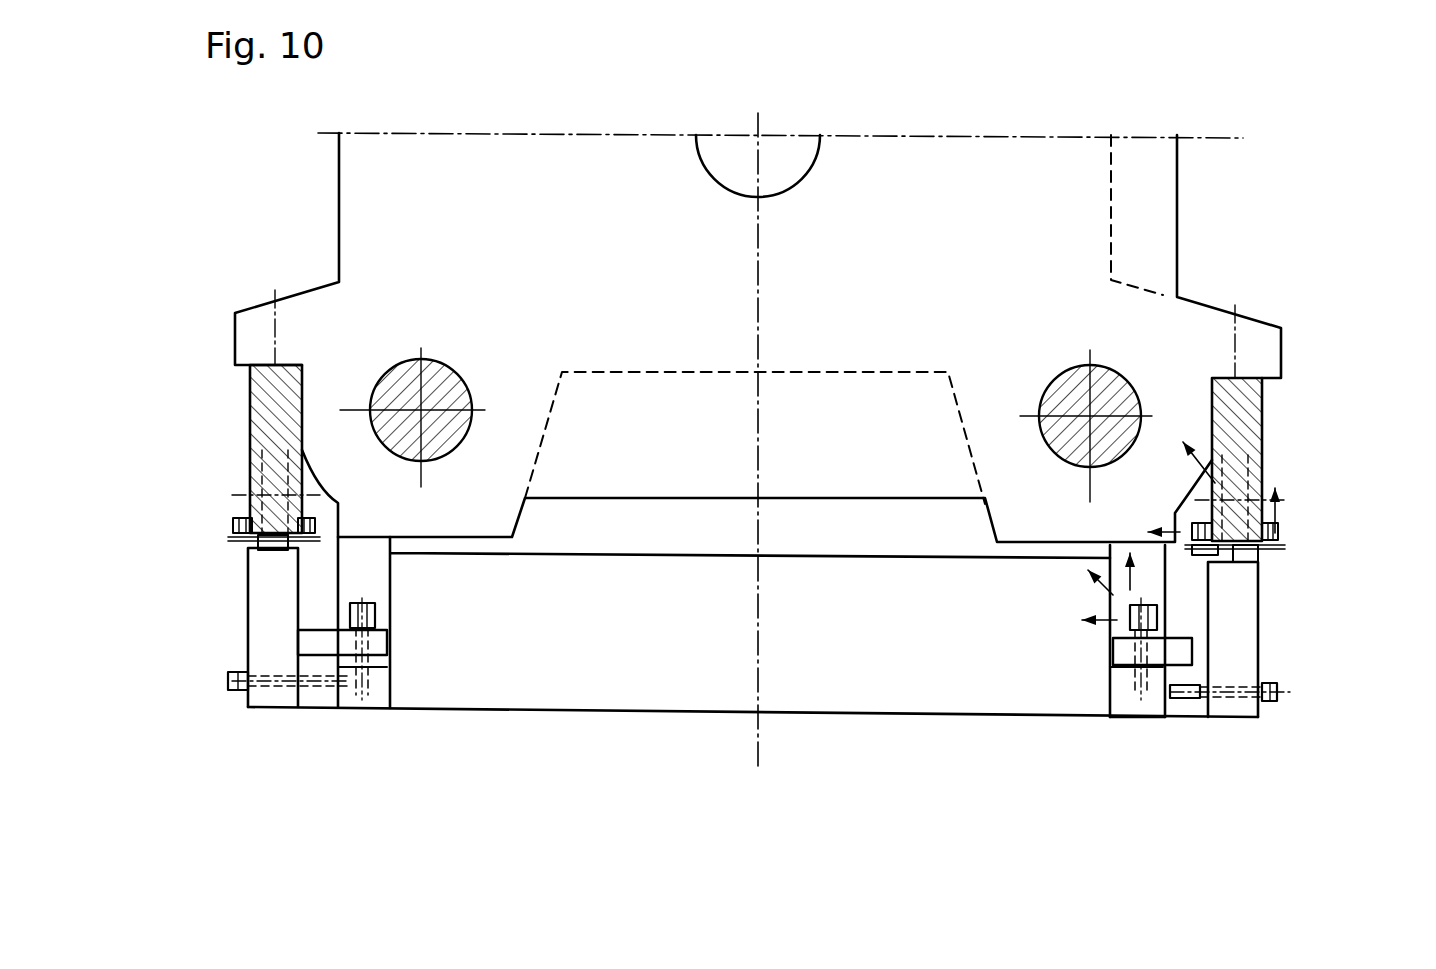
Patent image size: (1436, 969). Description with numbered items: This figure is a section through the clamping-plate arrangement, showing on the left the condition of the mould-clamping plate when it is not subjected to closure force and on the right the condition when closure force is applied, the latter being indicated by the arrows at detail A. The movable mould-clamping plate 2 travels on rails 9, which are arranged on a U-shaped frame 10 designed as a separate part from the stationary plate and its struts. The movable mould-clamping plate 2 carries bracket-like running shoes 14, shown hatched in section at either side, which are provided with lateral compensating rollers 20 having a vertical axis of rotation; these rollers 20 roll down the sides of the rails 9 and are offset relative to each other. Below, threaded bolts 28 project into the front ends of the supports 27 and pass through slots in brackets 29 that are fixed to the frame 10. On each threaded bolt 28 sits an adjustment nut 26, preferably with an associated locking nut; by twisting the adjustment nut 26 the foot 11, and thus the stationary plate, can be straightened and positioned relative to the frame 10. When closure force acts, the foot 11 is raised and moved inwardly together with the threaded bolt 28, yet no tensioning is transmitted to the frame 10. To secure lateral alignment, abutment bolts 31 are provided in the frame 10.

The movable mould-clamping plate 2 is at (388, 217).
The rails 9 is at (1238, 557).
The U-shaped frame 10 is at (273, 603).
The foot 11 is at (1133, 700).
The running shoe 14 is at (267, 428).
The lateral compensating rollers 20 is at (228, 541).
The adjustment nut 26 is at (373, 610).
The support 27 is at (378, 682).
The threaded bolt 28 is at (358, 670).
The bracket 29 is at (387, 640).
The abutment bolts 31 is at (233, 690).
The detail A direction arrow A is at (1283, 415).